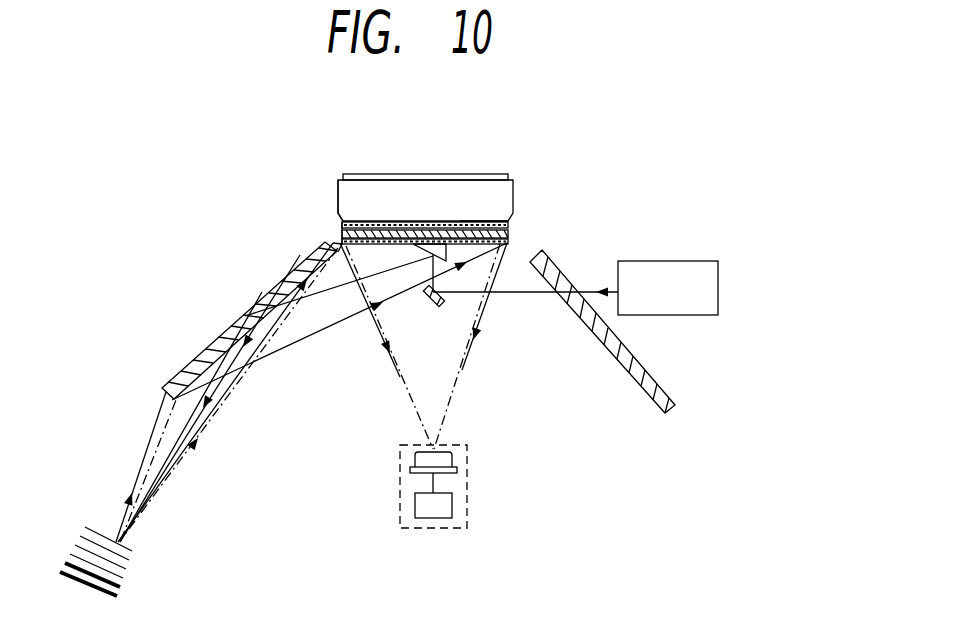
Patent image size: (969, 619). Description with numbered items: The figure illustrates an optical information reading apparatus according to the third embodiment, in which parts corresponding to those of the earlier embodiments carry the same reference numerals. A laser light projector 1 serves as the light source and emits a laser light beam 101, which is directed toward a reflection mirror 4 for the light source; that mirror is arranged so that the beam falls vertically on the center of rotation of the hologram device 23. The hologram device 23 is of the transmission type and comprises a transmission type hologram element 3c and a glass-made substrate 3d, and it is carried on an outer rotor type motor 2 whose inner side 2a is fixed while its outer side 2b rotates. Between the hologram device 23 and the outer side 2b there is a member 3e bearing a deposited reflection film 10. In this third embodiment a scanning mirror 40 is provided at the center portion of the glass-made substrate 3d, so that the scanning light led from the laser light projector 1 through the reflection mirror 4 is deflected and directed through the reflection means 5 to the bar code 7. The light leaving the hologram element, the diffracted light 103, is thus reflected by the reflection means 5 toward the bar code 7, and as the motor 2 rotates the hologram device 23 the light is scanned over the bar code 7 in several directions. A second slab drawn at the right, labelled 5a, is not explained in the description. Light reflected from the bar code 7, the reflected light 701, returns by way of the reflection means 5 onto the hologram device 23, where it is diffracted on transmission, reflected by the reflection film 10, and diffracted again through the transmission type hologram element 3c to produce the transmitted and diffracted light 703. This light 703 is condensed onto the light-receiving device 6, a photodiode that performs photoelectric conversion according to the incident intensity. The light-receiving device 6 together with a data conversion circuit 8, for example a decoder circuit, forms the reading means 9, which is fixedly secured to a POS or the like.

The laser light projector 1 is at (718, 283).
The motor 2 is at (457, 188).
The inner side of motor 2a is at (396, 174).
The outer side of motor 2b is at (338, 182).
The transmission type hologram element 3c is at (336, 253).
The substrate 3d is at (325, 244).
The member 3e is at (358, 222).
The reflection mirror 4 is at (433, 306).
The reflection means 5 is at (193, 357).
The beam splitter mirror 5a is at (568, 284).
The light-receiving device 6 is at (457, 470).
The bar code 7 is at (125, 543).
The data conversion circuit 8 is at (452, 508).
The reading means 9 is at (455, 530).
The reflection film 10 is at (340, 229).
The hologram device 23 is at (508, 233).
The scanning mirror 40 is at (473, 221).
The laser light beam 101 is at (605, 295).
The diffracted light 103 is at (325, 266).
The reflected light 701 is at (186, 461).
The transmitted and diffracted light 703 is at (447, 425).